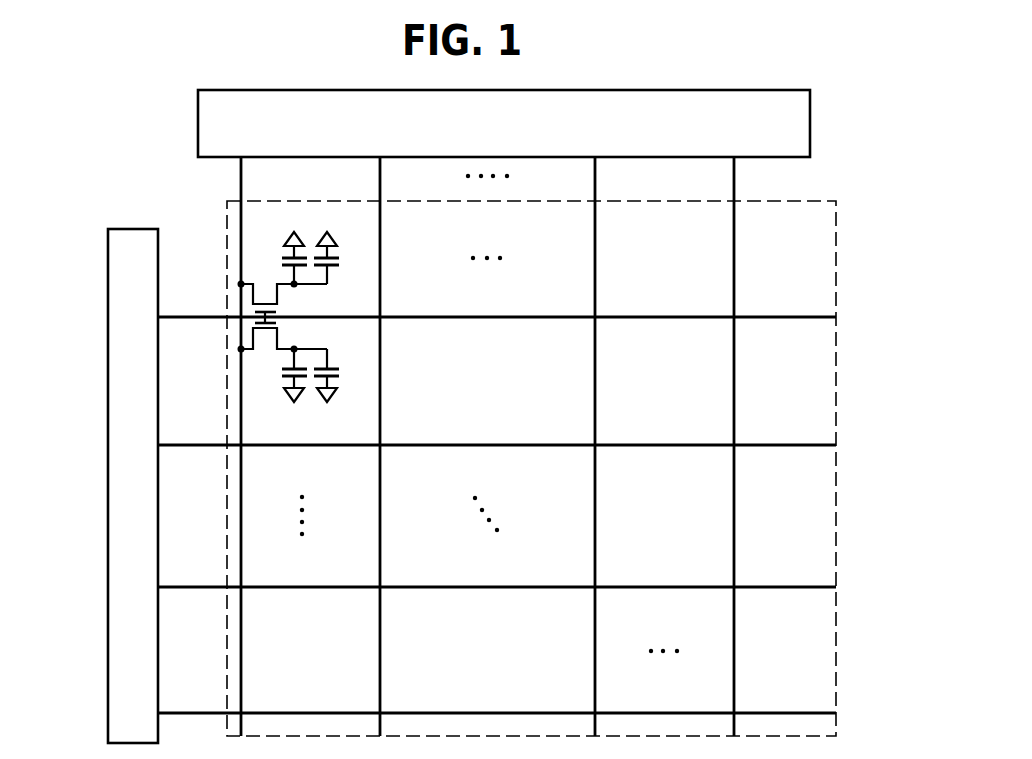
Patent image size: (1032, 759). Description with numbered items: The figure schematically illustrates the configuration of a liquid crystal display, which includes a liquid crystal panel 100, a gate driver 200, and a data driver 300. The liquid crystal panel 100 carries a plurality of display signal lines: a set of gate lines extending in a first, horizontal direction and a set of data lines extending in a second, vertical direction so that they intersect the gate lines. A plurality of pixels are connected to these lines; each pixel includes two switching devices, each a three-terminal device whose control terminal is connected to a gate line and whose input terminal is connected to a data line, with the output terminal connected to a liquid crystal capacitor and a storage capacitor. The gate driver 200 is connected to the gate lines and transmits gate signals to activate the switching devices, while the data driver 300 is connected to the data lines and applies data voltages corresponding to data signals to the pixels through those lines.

The liquid crystal panel 100 is at (838, 468).
The gate driver 200 is at (106, 483).
The data driver 300 is at (812, 122).